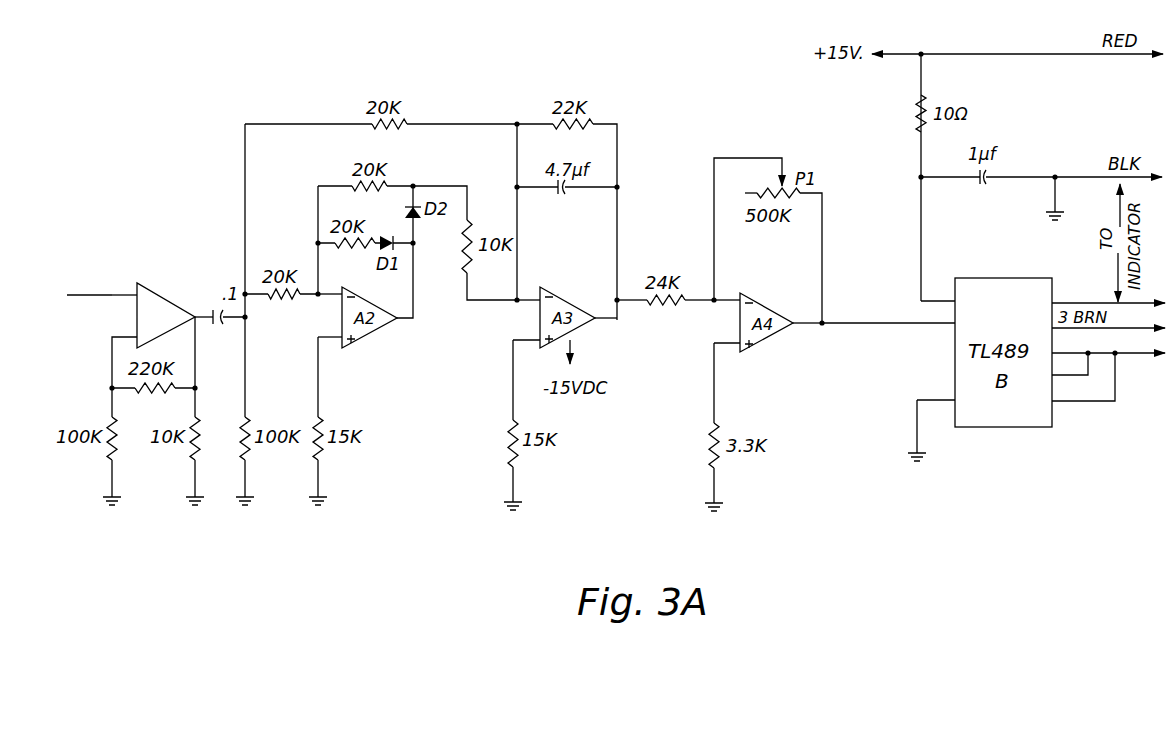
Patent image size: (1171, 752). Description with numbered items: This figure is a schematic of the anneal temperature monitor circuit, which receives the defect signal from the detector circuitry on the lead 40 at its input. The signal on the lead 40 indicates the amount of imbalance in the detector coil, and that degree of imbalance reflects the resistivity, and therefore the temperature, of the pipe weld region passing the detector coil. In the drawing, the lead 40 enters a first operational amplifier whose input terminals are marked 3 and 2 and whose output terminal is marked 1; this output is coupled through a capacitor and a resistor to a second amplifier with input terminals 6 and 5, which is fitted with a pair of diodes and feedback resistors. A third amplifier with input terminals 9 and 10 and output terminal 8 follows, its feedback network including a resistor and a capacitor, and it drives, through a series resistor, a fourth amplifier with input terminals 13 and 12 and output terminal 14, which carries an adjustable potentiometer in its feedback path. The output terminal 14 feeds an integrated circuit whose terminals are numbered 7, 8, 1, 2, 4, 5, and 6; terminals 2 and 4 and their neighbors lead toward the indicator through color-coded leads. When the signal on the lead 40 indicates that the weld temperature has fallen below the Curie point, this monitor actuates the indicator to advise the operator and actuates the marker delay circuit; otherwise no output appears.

The lead 40 is at (84, 292).
The terminal 1 is at (575, 377).
The terminal 2 is at (638, 335).
The terminal 3 is at (124, 285).
The terminal 4 is at (1108, 343).
The terminal 5 is at (703, 346).
The terminal 6 is at (716, 337).
The terminal 7 is at (938, 292).
The terminal 8 is at (775, 305).
The terminal 9 is at (528, 287).
The terminal 10 is at (526, 370).
The terminal 12 is at (727, 373).
The terminal 13 is at (727, 289).
The terminal 14 is at (807, 312).